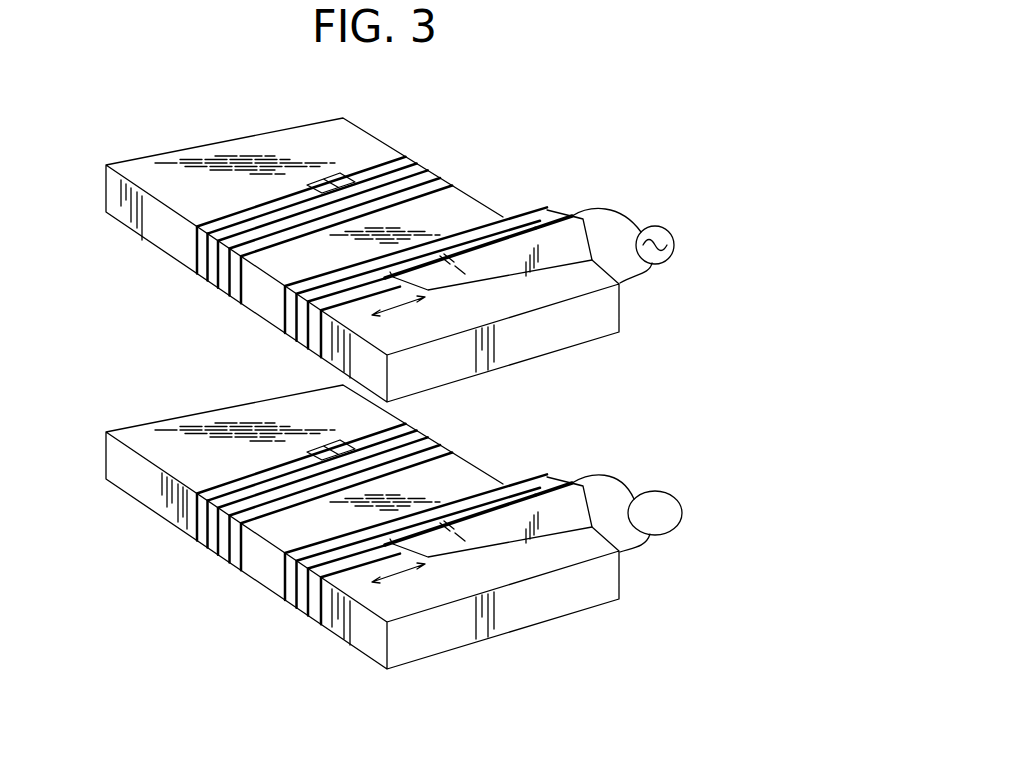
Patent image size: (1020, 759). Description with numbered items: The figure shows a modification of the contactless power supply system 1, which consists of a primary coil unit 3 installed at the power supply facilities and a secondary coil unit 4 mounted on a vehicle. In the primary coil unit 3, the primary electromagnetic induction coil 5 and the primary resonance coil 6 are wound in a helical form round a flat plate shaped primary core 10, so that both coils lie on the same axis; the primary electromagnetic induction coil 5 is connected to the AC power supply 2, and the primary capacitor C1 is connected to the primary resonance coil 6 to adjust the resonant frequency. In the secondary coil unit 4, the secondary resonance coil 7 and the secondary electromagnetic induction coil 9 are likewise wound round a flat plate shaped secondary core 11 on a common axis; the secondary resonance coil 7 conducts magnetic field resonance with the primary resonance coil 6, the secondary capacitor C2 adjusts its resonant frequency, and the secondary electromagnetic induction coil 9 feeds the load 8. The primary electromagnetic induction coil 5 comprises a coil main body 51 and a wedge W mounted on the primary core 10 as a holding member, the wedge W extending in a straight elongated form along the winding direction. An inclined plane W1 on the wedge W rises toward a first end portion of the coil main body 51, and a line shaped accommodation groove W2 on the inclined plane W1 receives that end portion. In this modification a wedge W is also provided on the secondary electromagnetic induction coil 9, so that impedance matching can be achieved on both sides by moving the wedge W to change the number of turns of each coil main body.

The power supply system 1 is at (174, 668).
The AC power supply 2 is at (661, 228).
The primary coil unit 3 is at (590, 131).
The secondary coil unit 4 is at (611, 633).
The primary electromagnetic induction coil 5 is at (560, 264).
The primary resonance coil 6 is at (445, 182).
The secondary resonance coil 7 is at (344, 483).
The load 8 is at (661, 493).
The secondary electromagnetic induction coil 9 is at (416, 522).
The primary core 10 is at (176, 243).
The secondary core 11 is at (362, 536).
The coil main body 51 is at (503, 215).
The primary capacitor C1 is at (345, 175).
The secondary capacitor C2 is at (292, 408).
The wedge W is at (564, 204).
The inclined plane W1 is at (507, 250).
The line shaped accommodation groove W2 is at (568, 216).